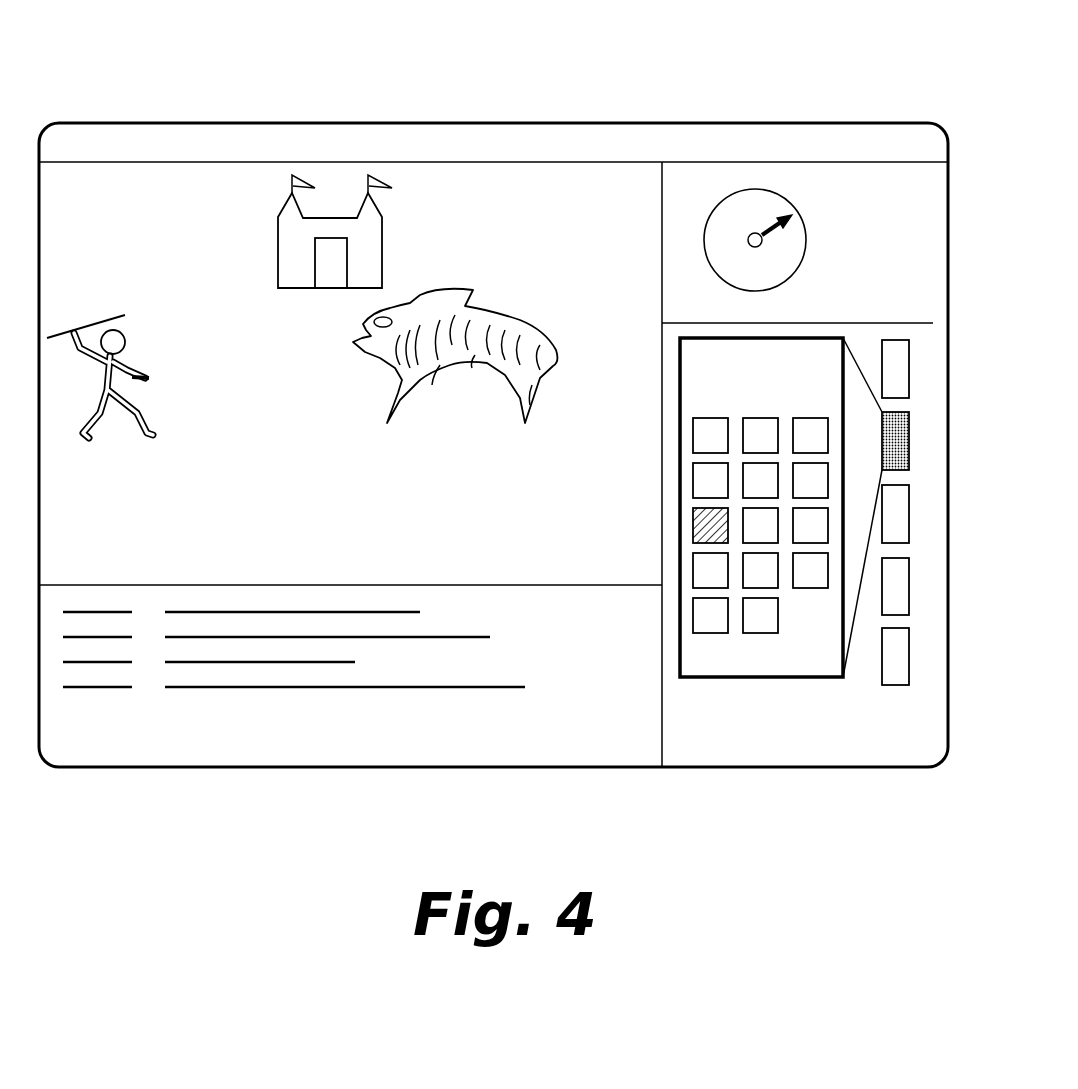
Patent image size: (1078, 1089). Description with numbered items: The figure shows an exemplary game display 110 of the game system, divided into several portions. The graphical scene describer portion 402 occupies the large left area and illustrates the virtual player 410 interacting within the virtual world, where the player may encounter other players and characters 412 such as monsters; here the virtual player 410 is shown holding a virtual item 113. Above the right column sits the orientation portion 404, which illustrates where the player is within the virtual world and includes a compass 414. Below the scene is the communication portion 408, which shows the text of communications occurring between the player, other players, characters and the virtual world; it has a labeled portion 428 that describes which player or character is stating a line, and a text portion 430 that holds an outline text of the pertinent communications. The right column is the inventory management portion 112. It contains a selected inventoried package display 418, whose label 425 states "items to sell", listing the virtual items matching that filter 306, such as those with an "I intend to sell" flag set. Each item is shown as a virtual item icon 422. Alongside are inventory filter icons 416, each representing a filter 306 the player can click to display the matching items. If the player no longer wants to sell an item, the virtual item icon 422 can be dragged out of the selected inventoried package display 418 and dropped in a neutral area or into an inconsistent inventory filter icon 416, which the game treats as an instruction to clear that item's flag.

The game display 110 is at (578, 58).
The graphical scene describer portion 402 is at (157, 217).
The orientation portion 404 is at (720, 180).
The compass 414 is at (797, 208).
The virtual item 113 is at (100, 315).
The virtual player 410 is at (130, 352).
The character 412 is at (492, 310).
The label 425 is at (712, 363).
The virtual item icon 422 is at (712, 632).
The selected inventoried package display 418 is at (702, 677).
The inventory filter icon 416 is at (908, 685).
The filter 306 is at (897, 340).
The communication portion 408 is at (88, 723).
The labeled portion 428 is at (95, 688).
The text portion 430 is at (273, 688).
The inventory management portion 112 is at (685, 750).